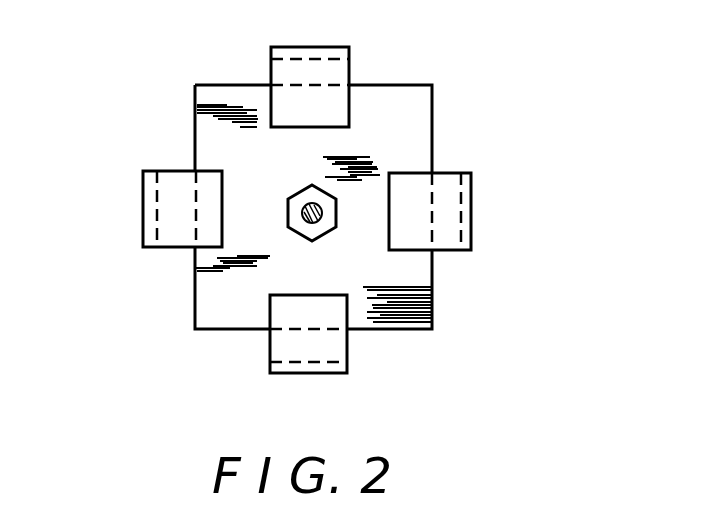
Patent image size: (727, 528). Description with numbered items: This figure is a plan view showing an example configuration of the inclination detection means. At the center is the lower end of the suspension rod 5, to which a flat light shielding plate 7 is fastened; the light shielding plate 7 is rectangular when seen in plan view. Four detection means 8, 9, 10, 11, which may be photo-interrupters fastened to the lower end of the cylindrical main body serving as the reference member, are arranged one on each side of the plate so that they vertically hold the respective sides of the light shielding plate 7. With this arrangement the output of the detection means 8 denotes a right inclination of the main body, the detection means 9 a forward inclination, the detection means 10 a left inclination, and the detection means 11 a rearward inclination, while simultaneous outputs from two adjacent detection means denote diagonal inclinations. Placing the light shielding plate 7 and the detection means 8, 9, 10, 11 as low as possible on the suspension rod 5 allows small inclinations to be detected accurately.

The suspension rod 5 is at (322, 203).
The light shielding plate 7 is at (420, 125).
The detection means 8 is at (172, 213).
The detection means 9 is at (320, 346).
The detection means 10 is at (445, 225).
The detection means 11 is at (278, 67).